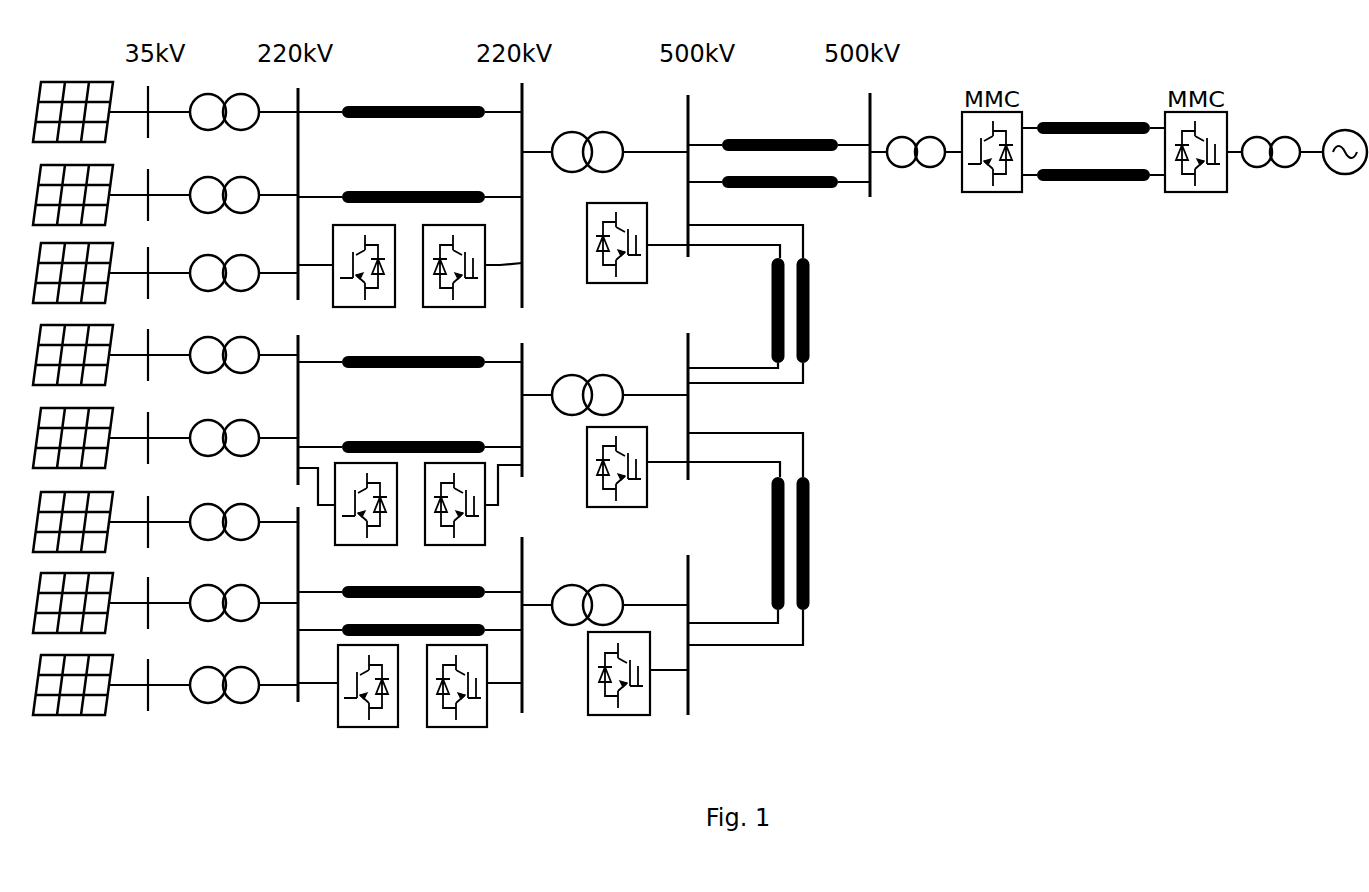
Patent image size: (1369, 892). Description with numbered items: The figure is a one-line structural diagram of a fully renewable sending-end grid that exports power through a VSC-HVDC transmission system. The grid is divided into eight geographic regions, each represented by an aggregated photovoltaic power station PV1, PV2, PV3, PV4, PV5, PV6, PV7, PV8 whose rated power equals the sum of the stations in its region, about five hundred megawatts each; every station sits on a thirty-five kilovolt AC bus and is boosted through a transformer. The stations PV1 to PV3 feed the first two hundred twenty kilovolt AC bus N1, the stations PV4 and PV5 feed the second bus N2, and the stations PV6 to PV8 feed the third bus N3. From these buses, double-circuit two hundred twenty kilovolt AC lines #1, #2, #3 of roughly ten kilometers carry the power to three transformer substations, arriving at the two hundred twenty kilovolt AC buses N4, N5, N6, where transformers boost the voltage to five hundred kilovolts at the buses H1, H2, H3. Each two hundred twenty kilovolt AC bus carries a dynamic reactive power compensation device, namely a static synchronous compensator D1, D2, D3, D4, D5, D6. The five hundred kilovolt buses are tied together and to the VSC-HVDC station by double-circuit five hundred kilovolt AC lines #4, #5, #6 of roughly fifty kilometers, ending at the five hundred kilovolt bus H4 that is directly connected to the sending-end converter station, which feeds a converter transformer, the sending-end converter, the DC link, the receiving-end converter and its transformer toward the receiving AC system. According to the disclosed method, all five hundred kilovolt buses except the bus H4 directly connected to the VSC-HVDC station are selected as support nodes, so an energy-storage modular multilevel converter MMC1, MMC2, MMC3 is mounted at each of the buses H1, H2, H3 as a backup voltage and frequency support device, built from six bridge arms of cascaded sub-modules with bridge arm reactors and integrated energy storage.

The aggregated photovoltaic power station PV1 is at (165, 119).
The aggregated photovoltaic power station PV2 is at (165, 203).
The aggregated photovoltaic power station PV3 is at (165, 281).
The aggregated photovoltaic power station PV4 is at (165, 363).
The aggregated photovoltaic power station PV5 is at (165, 446).
The aggregated photovoltaic power station PV6 is at (165, 532).
The aggregated photovoltaic power station PV7 is at (165, 613).
The aggregated photovoltaic power station PV8 is at (165, 695).
The first 220 kV AC bus N1 is at (318, 194).
The second 220 kV AC bus N2 is at (319, 410).
The third 220 kV AC bus N3 is at (317, 604).
The 220 kV AC bus N4 is at (505, 195).
The 220 kV AC bus N5 is at (505, 410).
The 220 kV AC bus N6 is at (505, 625).
The 500 kV bus H1 is at (671, 176).
The 500 kV bus H2 is at (671, 406).
The 500 kV bus H3 is at (673, 635).
The 500 kV bus H4 is at (878, 160).
The 220 kV AC line # 1 is at (410, 154).
The 220 kV AC line # 2 is at (410, 404).
The 220 kV AC line # 3 is at (410, 611).
The 500 kV AC line # 4 is at (776, 539).
The 500 kV AC line # 5 is at (772, 304).
The 500 kV AC line # 6 is at (779, 145).
The static synchronous compensator D1 is at (346, 281).
The static synchronous compensator D2 is at (347, 521).
The static synchronous compensator D3 is at (348, 701).
The static synchronous compensator D4 is at (472, 281).
The static synchronous compensator D5 is at (473, 521).
The static synchronous compensator D6 is at (474, 701).
The energy-storage MMC MMC1 is at (615, 273).
The energy-storage MMC MMC2 is at (615, 498).
The energy-storage MMC MMC3 is at (615, 707).